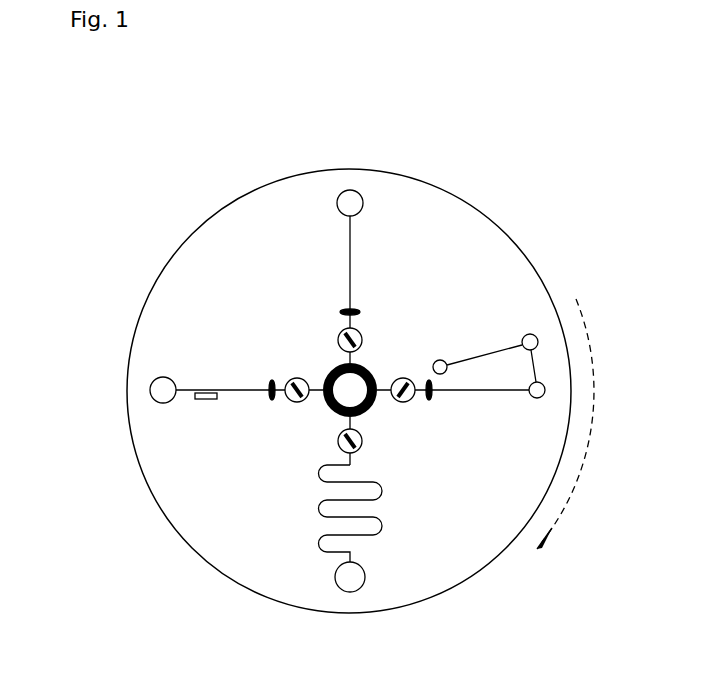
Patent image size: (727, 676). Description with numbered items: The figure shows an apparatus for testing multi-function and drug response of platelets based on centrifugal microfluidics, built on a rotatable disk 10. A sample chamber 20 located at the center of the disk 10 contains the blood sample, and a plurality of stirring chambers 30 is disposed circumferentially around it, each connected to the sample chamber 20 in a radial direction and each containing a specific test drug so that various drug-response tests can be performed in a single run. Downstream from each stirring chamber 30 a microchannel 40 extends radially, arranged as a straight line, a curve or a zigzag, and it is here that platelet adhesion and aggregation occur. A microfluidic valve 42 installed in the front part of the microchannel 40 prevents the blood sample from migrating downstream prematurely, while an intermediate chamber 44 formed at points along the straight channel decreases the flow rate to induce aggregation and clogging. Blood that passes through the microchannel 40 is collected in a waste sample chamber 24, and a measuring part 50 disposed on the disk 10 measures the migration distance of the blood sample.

The rotatable disk 10 is at (413, 177).
The sample chamber 20 is at (327, 405).
The waste sample chamber 24 is at (347, 190).
The stirring chamber 30 is at (343, 327).
The microchannel 40 is at (352, 271).
The microfluidic valve 42 is at (270, 380).
The intermediate chamber 44 is at (541, 384).
The measuring part 50 is at (208, 400).